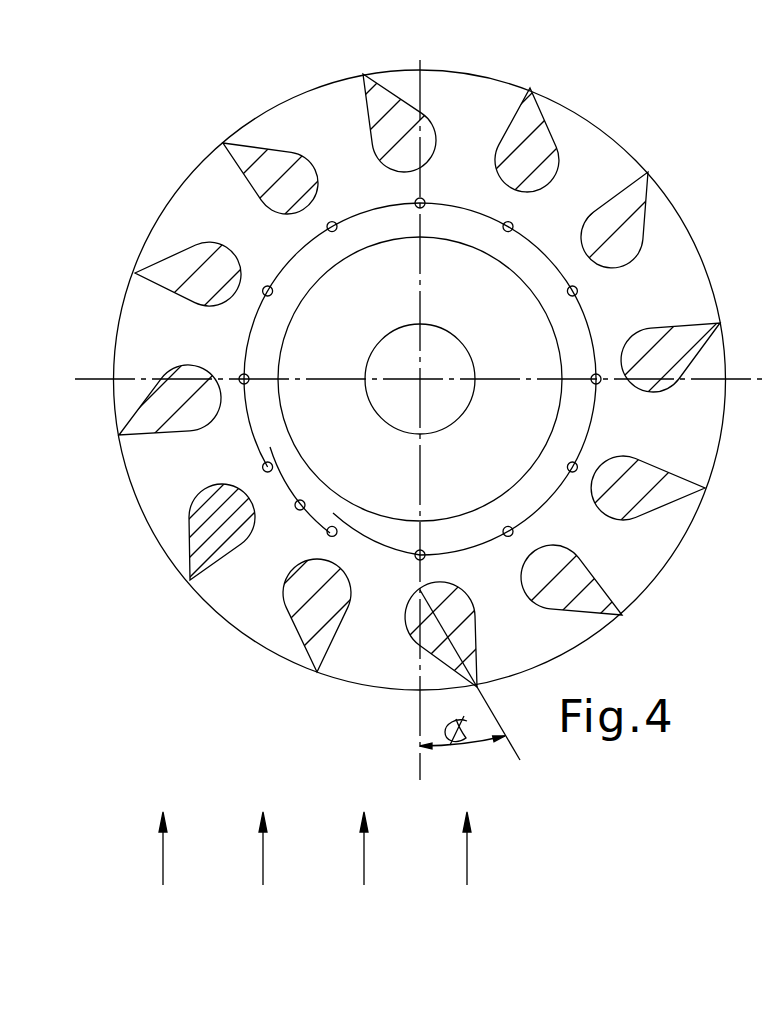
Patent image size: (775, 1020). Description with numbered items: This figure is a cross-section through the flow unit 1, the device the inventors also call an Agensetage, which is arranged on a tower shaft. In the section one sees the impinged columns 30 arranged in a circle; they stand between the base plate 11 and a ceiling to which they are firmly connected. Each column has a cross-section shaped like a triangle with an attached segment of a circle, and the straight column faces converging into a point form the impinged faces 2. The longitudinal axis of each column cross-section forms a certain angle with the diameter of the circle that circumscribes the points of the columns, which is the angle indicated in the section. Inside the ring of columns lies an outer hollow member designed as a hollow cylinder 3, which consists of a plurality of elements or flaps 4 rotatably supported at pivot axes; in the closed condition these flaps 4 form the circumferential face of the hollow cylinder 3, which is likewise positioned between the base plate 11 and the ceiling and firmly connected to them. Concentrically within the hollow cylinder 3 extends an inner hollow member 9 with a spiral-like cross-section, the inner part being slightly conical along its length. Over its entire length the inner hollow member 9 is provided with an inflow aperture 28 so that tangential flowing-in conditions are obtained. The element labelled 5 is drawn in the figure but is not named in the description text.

The flow unit 1 is at (516, 71).
The impinged faces 2 is at (410, 380).
The hollow cylinder 3 is at (358, 208).
The flaps 4 is at (300, 509).
The disc 5 is at (500, 470).
The inner hollow member 9 is at (473, 400).
The base plate 11 is at (650, 280).
The inflow aperture 28 is at (372, 378).
The impinged columns 30 is at (540, 152).